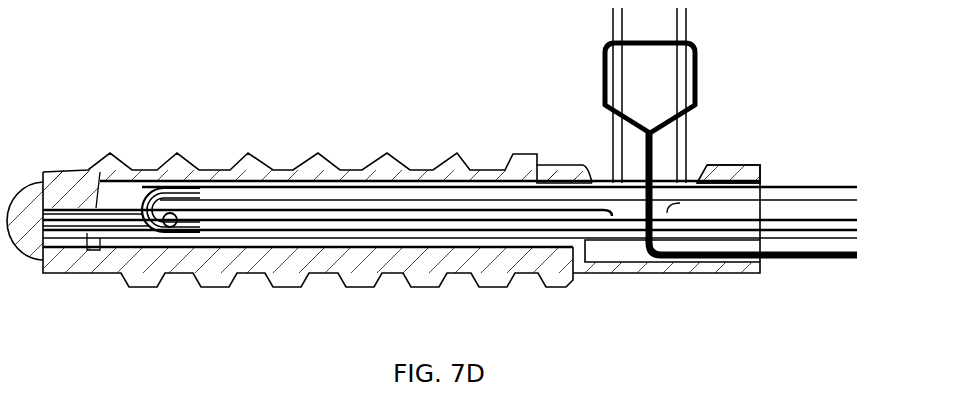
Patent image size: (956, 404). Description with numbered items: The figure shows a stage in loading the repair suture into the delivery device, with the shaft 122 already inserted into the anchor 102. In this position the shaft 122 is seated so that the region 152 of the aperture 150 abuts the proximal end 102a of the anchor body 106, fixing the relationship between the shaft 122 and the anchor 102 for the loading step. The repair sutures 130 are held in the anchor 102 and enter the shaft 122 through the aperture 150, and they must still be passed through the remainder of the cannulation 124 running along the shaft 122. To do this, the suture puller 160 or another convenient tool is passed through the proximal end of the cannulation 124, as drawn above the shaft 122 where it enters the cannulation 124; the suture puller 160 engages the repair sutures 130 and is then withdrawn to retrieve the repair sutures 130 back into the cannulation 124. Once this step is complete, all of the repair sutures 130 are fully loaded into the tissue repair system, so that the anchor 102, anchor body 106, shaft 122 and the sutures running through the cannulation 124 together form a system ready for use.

The anchor 102 is at (361, 263).
The proximal end of the anchor body 102a is at (537, 265).
The anchor body 106 is at (281, 263).
The shaft 122 is at (140, 177).
The cannulation 124 is at (619, 248).
The repair sutures 130 is at (217, 182).
The aperture 150 is at (693, 163).
The region of the aperture 152 is at (730, 265).
The suture puller 160 is at (600, 77).